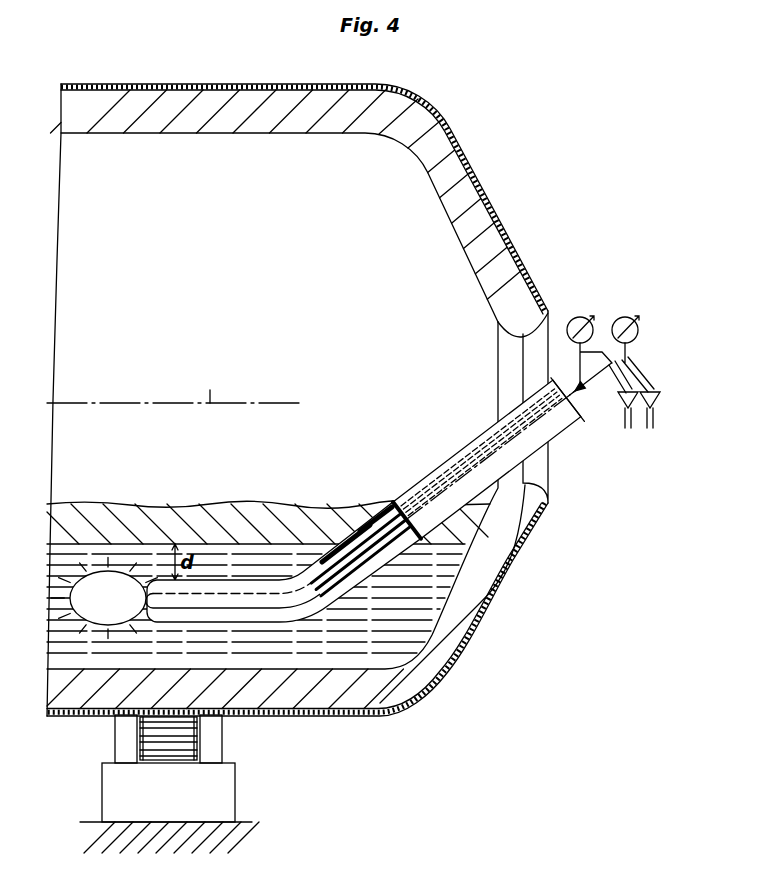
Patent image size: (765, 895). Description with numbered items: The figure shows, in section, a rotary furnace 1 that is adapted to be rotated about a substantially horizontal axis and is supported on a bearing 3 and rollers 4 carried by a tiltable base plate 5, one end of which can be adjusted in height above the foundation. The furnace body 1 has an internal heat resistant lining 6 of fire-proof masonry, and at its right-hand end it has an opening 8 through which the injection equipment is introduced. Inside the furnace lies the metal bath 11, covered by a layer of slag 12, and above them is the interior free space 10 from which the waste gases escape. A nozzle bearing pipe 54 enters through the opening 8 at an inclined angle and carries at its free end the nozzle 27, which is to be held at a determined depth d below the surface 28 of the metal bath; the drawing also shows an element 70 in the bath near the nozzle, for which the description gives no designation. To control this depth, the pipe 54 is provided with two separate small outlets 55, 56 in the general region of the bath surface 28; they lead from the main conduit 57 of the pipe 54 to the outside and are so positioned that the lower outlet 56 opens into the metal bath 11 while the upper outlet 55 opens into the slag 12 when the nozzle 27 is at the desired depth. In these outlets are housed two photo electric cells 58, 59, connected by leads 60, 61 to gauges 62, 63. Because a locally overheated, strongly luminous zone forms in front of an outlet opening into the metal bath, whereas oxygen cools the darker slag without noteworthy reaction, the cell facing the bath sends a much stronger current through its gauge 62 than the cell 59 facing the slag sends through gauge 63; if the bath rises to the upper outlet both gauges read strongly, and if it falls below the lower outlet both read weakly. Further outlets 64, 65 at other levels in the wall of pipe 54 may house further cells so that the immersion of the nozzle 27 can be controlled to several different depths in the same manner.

The rotary furnace 1 is at (497, 210).
The bearing 3 is at (222, 788).
The rollers 4 is at (122, 740).
The tiltable base plate 5 is at (158, 851).
The internal heat resistant lining 6 is at (460, 610).
The opening 8 is at (505, 341).
The interior free space 10 is at (186, 282).
The metal bath 11 is at (343, 640).
The layer of slag 12 is at (255, 513).
The nozzle 27 is at (213, 583).
The surface of the metal bath 28 is at (93, 545).
The nozzle bearing pipe 54 is at (562, 411).
The upper outlet 55 is at (343, 543).
The lower outlet 56 is at (320, 557).
The main conduit 57 is at (270, 622).
The photo electric cell 58 is at (355, 583).
The photo electric cell 59 is at (355, 528).
The lead 60 is at (630, 352).
The lead 61 is at (578, 359).
The gauge 62 is at (626, 315).
The gauge 63 is at (580, 315).
The further outlet 64 is at (373, 513).
The further outlet 65 is at (398, 498).
The gas bubble 70 is at (113, 580).